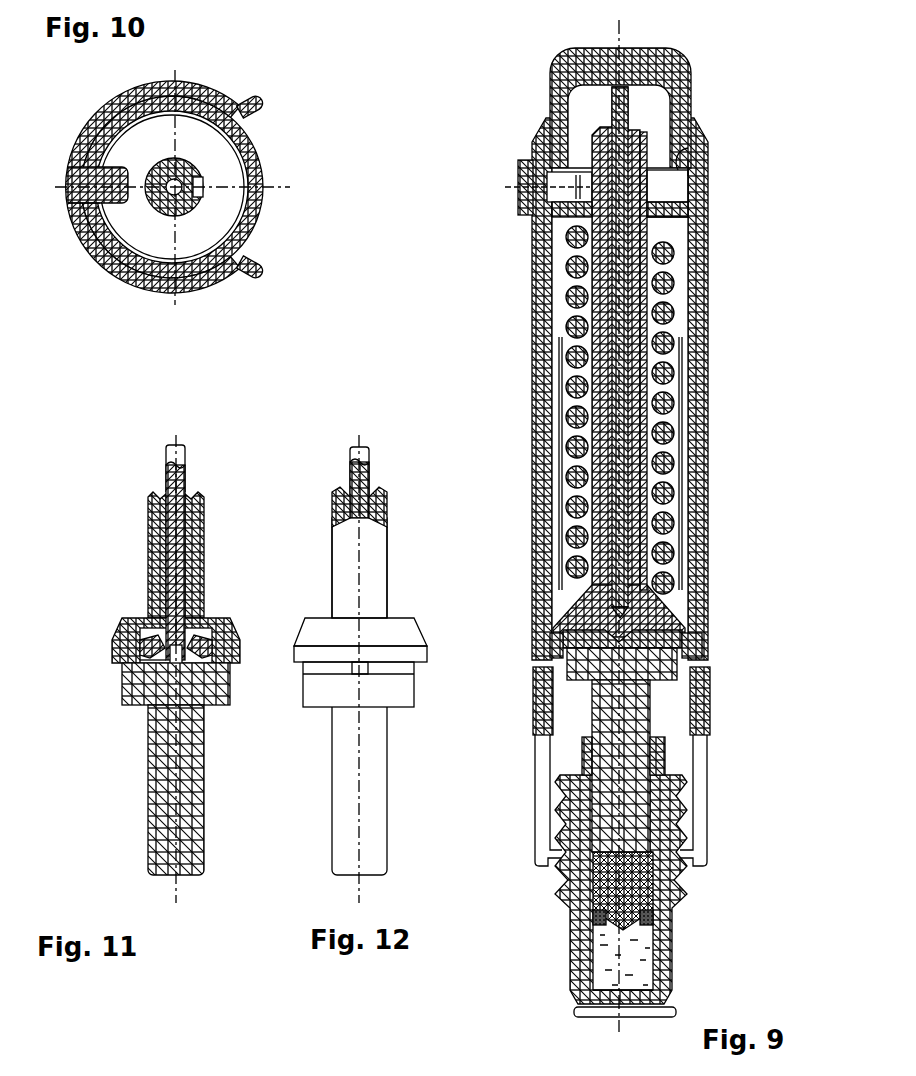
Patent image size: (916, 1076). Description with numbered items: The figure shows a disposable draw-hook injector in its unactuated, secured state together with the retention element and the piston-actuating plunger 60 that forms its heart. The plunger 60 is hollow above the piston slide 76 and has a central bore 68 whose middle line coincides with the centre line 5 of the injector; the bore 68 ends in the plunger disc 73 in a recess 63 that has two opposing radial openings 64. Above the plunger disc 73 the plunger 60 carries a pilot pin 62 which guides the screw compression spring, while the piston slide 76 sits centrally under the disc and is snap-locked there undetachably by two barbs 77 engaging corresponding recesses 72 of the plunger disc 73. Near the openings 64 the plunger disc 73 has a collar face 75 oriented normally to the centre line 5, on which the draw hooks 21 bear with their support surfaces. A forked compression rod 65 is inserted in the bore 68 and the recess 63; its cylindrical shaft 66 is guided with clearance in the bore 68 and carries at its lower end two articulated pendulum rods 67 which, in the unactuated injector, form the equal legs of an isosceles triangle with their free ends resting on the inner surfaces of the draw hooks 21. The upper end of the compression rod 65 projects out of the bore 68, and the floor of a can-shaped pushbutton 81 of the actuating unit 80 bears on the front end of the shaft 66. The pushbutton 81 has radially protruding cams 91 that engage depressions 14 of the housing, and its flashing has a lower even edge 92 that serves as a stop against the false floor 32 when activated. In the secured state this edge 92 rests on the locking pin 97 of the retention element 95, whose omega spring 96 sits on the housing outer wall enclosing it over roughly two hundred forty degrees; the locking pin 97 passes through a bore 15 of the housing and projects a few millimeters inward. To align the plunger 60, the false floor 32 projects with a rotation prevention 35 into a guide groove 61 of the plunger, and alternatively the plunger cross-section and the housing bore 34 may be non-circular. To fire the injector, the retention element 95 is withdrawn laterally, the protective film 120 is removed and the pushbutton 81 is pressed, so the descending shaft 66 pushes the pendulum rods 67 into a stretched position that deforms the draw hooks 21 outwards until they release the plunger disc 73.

In FIG. 9, the centre line 5 is at (691, 750).
In FIG. 9, the depressions 14 is at (695, 166).
In FIG. 10, the bore 15 is at (90, 203).
In FIG. 9, the draw hooks 21 is at (699, 554).
In FIG. 9, the false floor 32 is at (673, 220).
In FIG. 9, the bore 34 is at (592, 208).
In FIG. 9, the rotation prevention 35 is at (686, 228).
In FIG. 10, the rotation prevention 35 is at (198, 194).
In FIG. 9, the piston-actuating plunger 60 is at (659, 436).
In FIG. 9, the guide groove 61 is at (645, 183).
In FIG. 10, the guide groove 61 is at (191, 174).
In FIG. 9, the pilot pin 62 is at (637, 497).
In FIG. 9, the recess 63 is at (690, 650).
In FIG. 11, the recess 63 is at (163, 640).
In FIG. 12, the openings 64 is at (362, 668).
In FIG. 9, the compression rod 65 is at (633, 405).
In FIG. 9, the shaft 66 is at (622, 468).
In FIG. 11, the shaft 66 is at (173, 543).
In FIG. 9, the pendulum rods 67 is at (649, 626).
In FIG. 11, the central bore 68 is at (167, 518).
In FIG. 11, the recesses 72 is at (147, 650).
In FIG. 11, the plunger disc 73 is at (107, 651).
In FIG. 11, the collar face 75 is at (160, 650).
In FIG. 9, the piston slide 76 is at (633, 753).
In FIG. 11, the piston slide 76 is at (168, 775).
In FIG. 11, the barbs 77 is at (157, 660).
In FIG. 9, the actuating unit 80 is at (683, 106).
In FIG. 9, the pushbutton 81 is at (663, 75).
In FIG. 9, the cams 91 is at (688, 153).
In FIG. 9, the edge 92 is at (690, 173).
In FIG. 10, the retention element 95 is at (224, 292).
In FIG. 10, the omega spring 96 is at (192, 283).
In FIG. 9, the locking pin 97 is at (547, 192).
In FIG. 10, the locking pin 97 is at (115, 192).
In FIG. 9, the protective film 120 is at (603, 1020).